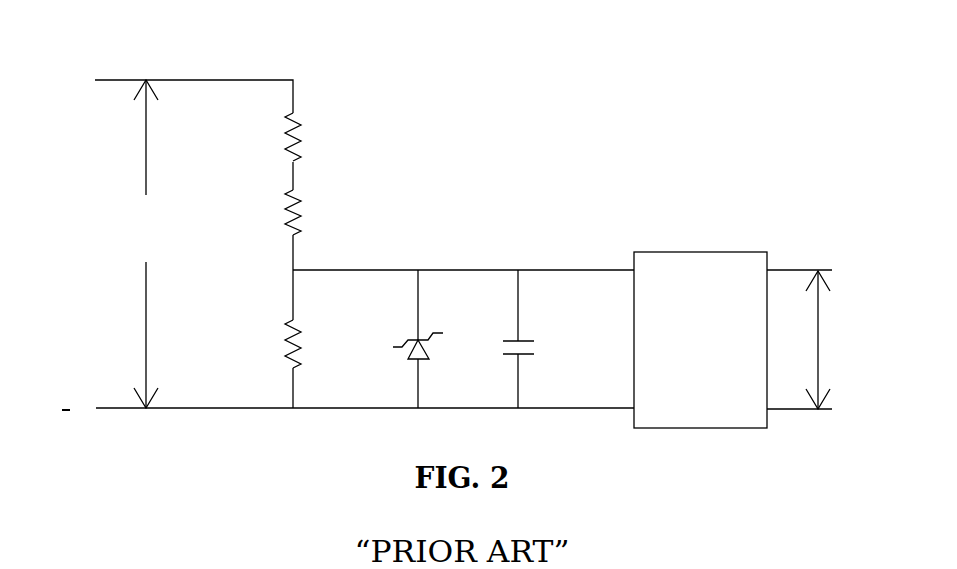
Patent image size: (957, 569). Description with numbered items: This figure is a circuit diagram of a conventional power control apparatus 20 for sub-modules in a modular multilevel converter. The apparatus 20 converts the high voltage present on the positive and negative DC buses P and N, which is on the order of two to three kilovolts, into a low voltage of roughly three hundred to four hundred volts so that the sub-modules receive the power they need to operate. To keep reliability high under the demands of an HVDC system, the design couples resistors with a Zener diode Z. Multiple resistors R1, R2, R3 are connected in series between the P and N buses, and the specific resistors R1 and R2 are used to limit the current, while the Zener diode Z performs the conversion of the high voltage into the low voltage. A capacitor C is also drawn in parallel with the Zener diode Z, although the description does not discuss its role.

The power control apparatus 20 is at (514, 62).
The resistor R1 is at (307, 137).
The resistor R2 is at (307, 212).
The resistor R3 is at (307, 344).
The Zener diode Z is at (420, 339).
The capacitor C is at (529, 339).